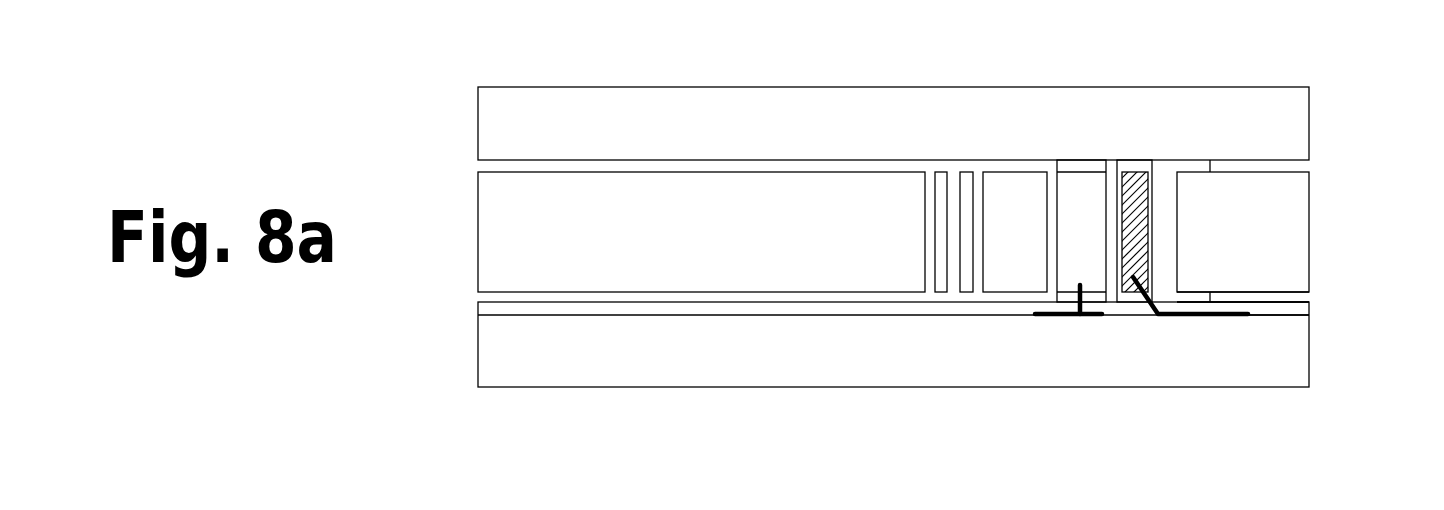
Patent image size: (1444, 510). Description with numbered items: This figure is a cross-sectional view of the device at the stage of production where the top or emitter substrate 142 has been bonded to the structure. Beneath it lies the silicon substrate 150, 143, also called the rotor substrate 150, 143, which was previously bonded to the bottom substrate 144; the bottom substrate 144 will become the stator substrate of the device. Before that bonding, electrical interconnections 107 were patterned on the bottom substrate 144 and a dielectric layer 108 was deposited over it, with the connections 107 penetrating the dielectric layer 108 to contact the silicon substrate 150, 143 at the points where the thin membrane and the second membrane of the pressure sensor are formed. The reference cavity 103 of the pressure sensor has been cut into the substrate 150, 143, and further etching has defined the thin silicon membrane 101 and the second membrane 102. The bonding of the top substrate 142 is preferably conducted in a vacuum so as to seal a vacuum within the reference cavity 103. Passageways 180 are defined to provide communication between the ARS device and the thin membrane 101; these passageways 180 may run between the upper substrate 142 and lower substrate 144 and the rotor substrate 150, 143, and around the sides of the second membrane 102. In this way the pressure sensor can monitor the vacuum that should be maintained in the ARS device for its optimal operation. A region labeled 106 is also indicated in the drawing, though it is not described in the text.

The top or emitter substrate 142 is at (893, 123).
The bottom substrate 144 is at (893, 344).
The silicon substrate 150 is at (701, 232).
The rotor substrate 143 is at (701, 232).
The passageways 180 is at (963, 163).
The second membrane 102 is at (1075, 263).
The thin silicon membrane 101 is at (1131, 252).
The reference cavity 103 is at (1163, 255).
The electrical interconnections 107 is at (1095, 317).
The gap 106 is at (1298, 298).
The dielectric layer 108 is at (1298, 307).